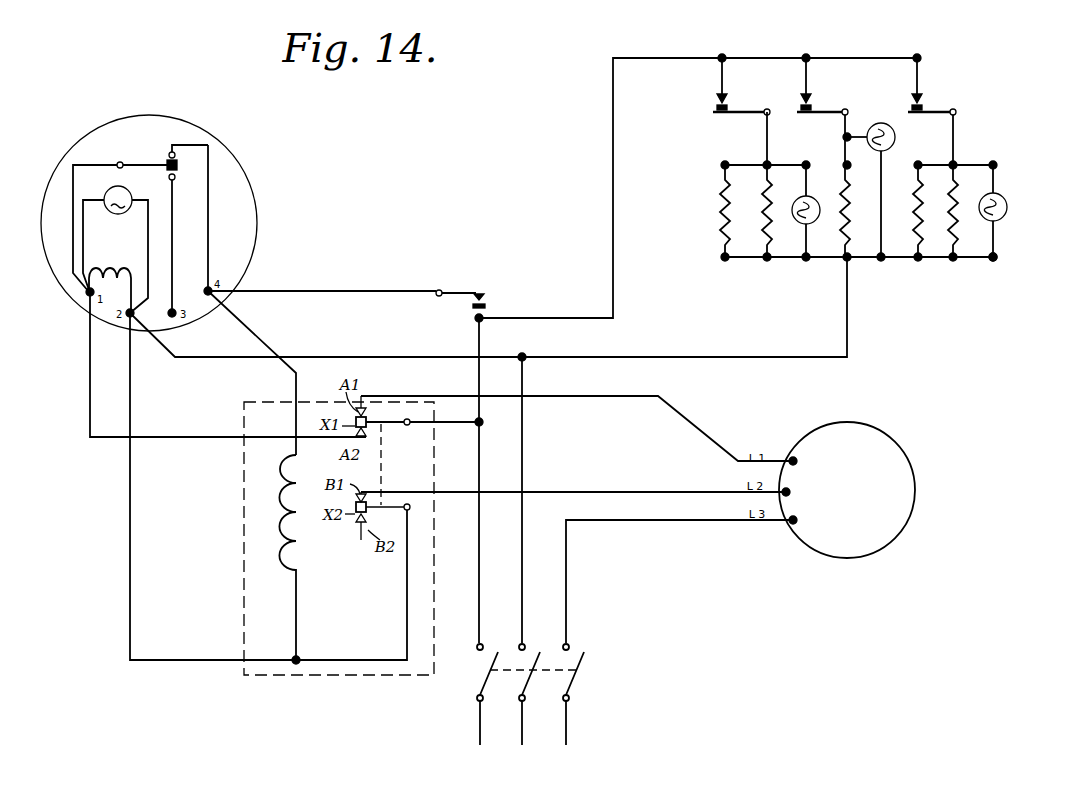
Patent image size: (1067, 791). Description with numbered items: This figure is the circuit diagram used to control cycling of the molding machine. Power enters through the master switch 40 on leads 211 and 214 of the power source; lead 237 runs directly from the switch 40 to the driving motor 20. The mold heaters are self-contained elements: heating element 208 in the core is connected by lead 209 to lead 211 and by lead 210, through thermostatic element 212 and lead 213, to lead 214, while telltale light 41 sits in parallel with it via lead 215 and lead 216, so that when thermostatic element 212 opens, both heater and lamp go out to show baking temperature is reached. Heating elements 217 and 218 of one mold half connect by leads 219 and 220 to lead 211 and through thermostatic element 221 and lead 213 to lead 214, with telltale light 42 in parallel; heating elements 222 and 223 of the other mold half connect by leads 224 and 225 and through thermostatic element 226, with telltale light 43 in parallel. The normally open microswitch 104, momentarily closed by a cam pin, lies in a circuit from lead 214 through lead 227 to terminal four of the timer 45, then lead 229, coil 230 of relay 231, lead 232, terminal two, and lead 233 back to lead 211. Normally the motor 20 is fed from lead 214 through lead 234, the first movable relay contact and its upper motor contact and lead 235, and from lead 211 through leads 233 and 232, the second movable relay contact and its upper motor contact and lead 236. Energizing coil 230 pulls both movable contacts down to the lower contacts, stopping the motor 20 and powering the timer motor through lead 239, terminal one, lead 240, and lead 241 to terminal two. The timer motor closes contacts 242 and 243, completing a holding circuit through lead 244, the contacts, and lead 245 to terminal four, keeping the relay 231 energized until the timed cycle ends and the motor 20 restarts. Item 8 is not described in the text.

The relay R 8 is at (103, 190).
The driving motor 20 is at (892, 456).
The master switch 40 is at (585, 678).
The telltale light 41 is at (895, 140).
The telltale light 42 is at (814, 200).
The telltale light 43 is at (1001, 194).
The timer 45 is at (257, 192).
The microswitch 104 is at (488, 298).
The heating element 208 is at (838, 227).
The lead 209 is at (850, 246).
The lead 210 is at (828, 120).
The lead of the power source 211 is at (526, 460).
The thermostatic element 212 is at (804, 92).
The lead 213 is at (613, 128).
The lead of the power source 214 is at (479, 474).
The lead 215 is at (886, 168).
The lead 216 is at (857, 135).
The heating element 217 is at (722, 205).
The heating element 218 is at (765, 230).
The lead 219 is at (724, 259).
The lead 220 is at (784, 259).
The thermostatic element 221 is at (715, 92).
The heating element 222 is at (922, 228).
The heating element 223 is at (960, 228).
The lead 224 is at (930, 258).
The lead 225 is at (982, 258).
The thermostatic element 226 is at (910, 92).
The lead 227 is at (310, 292).
The lead 229 is at (258, 335).
The coil 230 is at (244, 513).
The relay 231 is at (244, 588).
The lead 232 is at (128, 497).
The lead 233 is at (343, 357).
The lead 234 is at (457, 422).
The lead 235 is at (695, 427).
The lead 236 is at (658, 492).
The lead 237 is at (640, 522).
The lead 239 is at (88, 372).
The lead 240 is at (83, 240).
The lead 241 is at (147, 244).
The contact 242 is at (178, 166).
The contact 243 is at (167, 152).
The lead 244 is at (73, 176).
The lead 245 is at (210, 233).